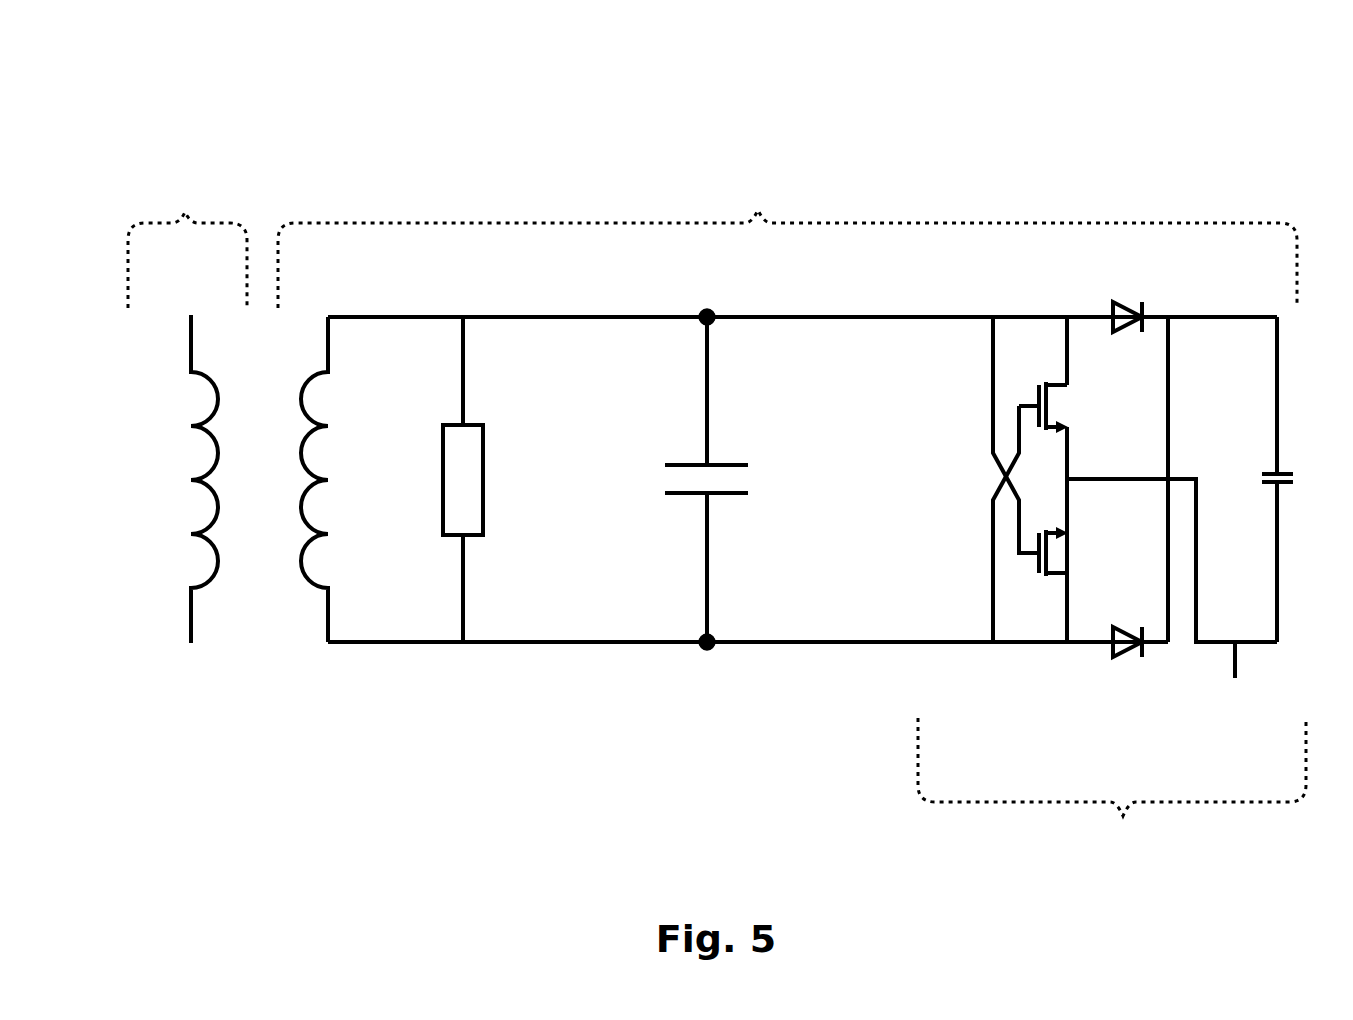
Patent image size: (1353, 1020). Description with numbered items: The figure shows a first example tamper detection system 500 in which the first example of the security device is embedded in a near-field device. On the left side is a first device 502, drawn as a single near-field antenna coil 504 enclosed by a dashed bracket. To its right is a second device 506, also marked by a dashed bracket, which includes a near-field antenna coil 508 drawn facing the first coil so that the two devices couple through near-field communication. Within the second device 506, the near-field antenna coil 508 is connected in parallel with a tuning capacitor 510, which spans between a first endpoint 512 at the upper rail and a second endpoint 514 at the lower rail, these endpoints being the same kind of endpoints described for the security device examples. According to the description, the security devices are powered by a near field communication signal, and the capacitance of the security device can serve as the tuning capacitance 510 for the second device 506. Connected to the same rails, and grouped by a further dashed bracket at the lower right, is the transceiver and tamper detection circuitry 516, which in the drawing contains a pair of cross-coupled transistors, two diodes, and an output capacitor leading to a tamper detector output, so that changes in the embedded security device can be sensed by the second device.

The tamper detection system 500 is at (193, 120).
The first device 502 is at (187, 408).
The near-field antenna coil 504 is at (194, 479).
The second device 506 is at (792, 519).
The near-field antenna coil 508 is at (323, 479).
The tuning capacitor 510 is at (690, 460).
The first endpoint 512 is at (707, 304).
The second endpoint 514 is at (707, 659).
The transceiver and tamper detection circuitry 516 is at (1112, 565).